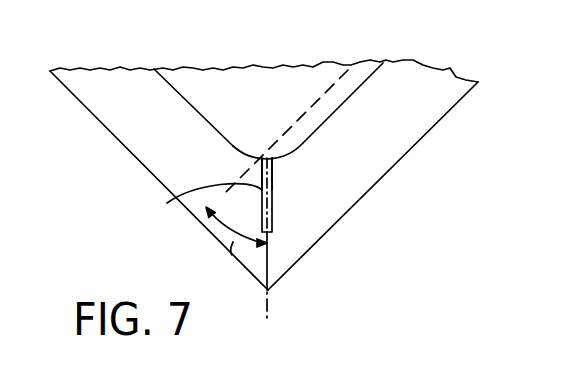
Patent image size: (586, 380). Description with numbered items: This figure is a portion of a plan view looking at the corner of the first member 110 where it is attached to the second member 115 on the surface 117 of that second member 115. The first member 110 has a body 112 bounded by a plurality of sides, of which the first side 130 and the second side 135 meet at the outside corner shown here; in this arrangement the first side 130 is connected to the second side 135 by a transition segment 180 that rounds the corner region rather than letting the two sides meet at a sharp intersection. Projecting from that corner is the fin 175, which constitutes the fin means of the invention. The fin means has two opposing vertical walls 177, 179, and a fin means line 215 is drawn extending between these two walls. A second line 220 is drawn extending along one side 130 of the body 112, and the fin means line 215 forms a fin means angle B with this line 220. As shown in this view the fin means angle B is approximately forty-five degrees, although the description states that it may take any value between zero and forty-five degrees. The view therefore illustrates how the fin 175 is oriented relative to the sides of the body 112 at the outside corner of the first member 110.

The first member 110 is at (272, 116).
The body 112 is at (202, 78).
The second member 115 is at (159, 180).
The surface 117 is at (120, 107).
The first side 130 is at (345, 108).
The second side 135 is at (195, 110).
The fin 175 is at (321, 184).
The vertical wall 177 is at (274, 185).
The vertical wall 179 is at (190, 202).
The transition segment 180 is at (231, 146).
The fin means line 215 is at (270, 267).
The line 220 is at (210, 207).
The fin means angle B is at (232, 255).